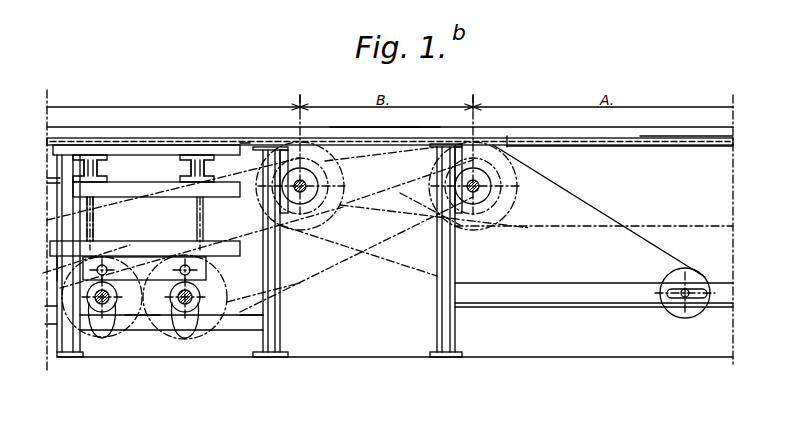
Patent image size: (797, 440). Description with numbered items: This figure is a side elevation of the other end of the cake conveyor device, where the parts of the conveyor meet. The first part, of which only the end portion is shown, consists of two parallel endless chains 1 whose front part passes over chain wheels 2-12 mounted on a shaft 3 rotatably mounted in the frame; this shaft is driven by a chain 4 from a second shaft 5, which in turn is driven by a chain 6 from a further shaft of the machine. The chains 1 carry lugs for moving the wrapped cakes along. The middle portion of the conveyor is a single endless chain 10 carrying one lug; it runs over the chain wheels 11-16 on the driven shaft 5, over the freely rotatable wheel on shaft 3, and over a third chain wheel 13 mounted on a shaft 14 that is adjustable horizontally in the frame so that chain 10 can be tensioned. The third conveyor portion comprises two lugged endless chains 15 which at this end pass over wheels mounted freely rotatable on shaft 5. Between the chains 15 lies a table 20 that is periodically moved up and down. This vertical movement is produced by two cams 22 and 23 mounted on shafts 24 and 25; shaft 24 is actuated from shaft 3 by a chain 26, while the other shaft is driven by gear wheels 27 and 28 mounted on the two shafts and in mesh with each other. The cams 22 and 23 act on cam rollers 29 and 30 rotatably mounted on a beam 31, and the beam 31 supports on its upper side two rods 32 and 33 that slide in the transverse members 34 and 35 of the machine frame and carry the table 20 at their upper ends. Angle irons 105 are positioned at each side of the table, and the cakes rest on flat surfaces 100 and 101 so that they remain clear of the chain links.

The endless chains 1 is at (593, 142).
The chain wheels 2-12 is at (513, 197).
The shaft 3 is at (474, 185).
The chain 4 is at (363, 138).
The second shaft 5 is at (301, 185).
The chain 6 is at (168, 193).
The endless chain 10 is at (400, 138).
The chain wheels 11-16 is at (308, 200).
The third chain wheel 13 is at (667, 276).
The shaft 14 is at (686, 293).
The endless chains 15 is at (245, 138).
The table 20 is at (98, 149).
The cam 22 is at (197, 323).
The cam 23 is at (108, 327).
The shaft 24 is at (185, 305).
The shaft 25 is at (102, 304).
The chain 26 is at (327, 265).
The gear wheel 27 is at (230, 302).
The gear wheel 28 is at (140, 317).
The cam roller 29 is at (207, 273).
The cam roller 30 is at (82, 271).
The beam 31 is at (115, 251).
The rod 32 is at (203, 213).
The rod 33 is at (93, 217).
The transverse member 34 is at (108, 170).
The transverse member 35 is at (222, 162).
The flat surface 100 is at (433, 136).
The flat surface 101 is at (650, 137).
The angle irons 105 is at (550, 136).